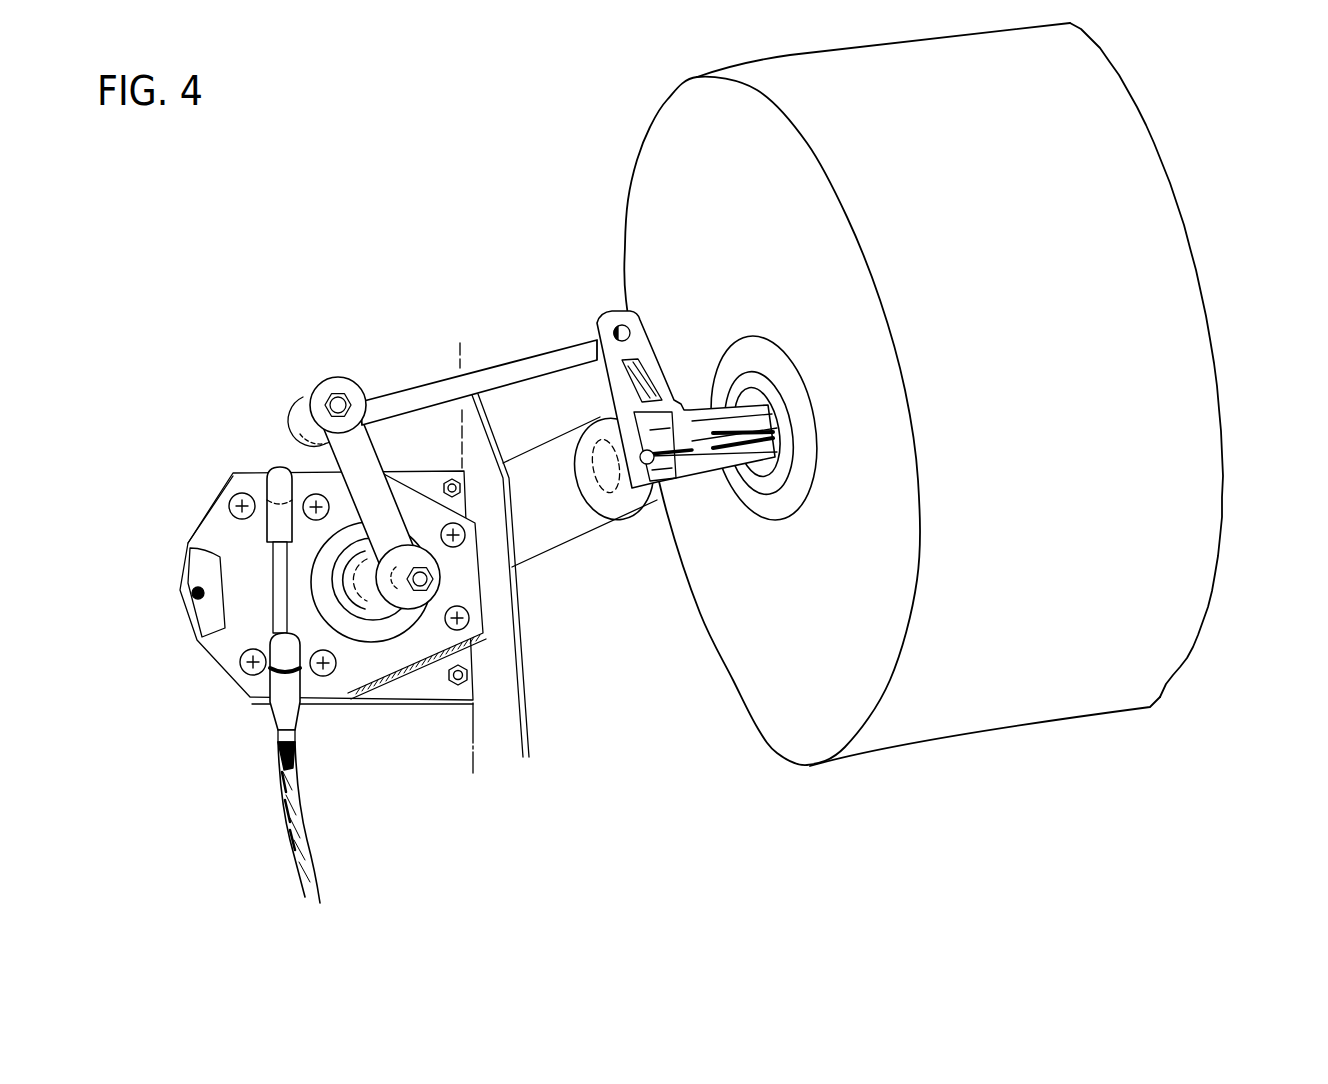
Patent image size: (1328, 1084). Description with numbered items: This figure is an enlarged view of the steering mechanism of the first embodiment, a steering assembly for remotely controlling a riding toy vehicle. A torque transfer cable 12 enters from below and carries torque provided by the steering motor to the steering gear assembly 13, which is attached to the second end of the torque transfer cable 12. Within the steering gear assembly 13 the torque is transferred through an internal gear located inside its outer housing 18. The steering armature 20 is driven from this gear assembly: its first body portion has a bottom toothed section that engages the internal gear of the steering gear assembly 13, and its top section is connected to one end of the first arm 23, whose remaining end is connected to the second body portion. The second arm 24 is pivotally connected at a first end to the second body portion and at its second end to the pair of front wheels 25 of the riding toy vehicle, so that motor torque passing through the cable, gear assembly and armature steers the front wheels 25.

The torque transfer cable 12 is at (310, 855).
The steering gear assembly 13 is at (352, 722).
The outer housing 18 is at (392, 653).
The steering armature 20 is at (284, 387).
The first arm 23 is at (345, 451).
The second arm 24 is at (530, 372).
The front wheels 25 is at (1162, 400).